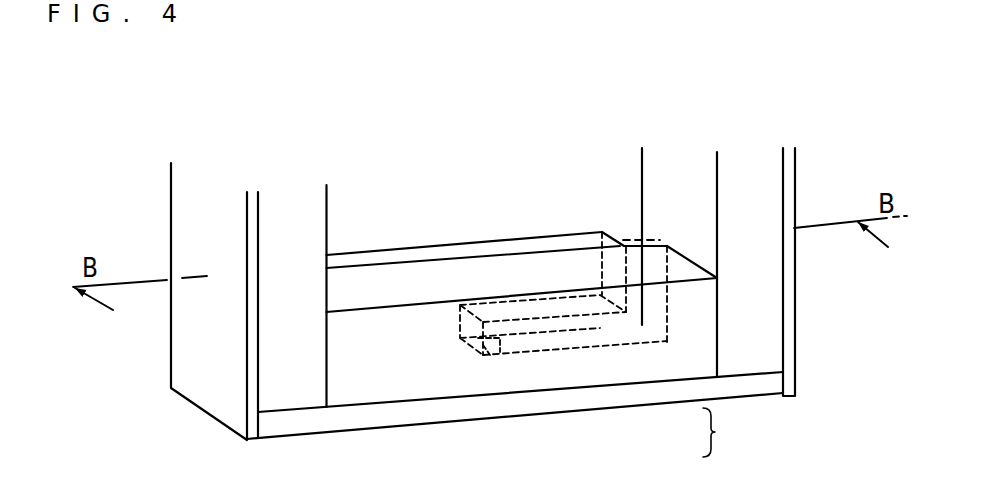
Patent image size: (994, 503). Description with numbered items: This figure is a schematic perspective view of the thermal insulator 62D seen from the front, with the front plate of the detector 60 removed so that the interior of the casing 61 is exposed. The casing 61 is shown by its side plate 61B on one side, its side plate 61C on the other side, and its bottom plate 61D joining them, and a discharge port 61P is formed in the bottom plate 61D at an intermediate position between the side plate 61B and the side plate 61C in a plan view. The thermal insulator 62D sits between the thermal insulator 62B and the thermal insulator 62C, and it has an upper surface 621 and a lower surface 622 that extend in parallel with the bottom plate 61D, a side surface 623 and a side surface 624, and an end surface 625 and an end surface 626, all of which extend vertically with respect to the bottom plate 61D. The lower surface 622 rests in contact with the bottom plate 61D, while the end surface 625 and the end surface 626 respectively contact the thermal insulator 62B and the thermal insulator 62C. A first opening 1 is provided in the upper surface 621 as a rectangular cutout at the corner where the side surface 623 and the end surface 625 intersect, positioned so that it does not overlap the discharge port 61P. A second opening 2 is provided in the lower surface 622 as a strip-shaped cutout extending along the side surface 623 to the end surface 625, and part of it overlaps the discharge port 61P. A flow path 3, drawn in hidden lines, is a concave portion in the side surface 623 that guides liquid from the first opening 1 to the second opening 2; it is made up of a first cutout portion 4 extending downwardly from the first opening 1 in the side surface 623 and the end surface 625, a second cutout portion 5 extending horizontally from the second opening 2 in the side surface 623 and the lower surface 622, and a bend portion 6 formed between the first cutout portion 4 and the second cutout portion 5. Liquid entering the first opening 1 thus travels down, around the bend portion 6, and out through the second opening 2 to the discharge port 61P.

The detector 60 is at (874, 128).
The casing 61 is at (172, 203).
The side plate 61B is at (792, 147).
The side plate 61C is at (212, 222).
The bottom plate 61D is at (342, 435).
The discharge port 61P is at (495, 362).
The thermal insulator 62B is at (752, 155).
The thermal insulator 62C is at (295, 203).
The thermal insulator 62D is at (418, 270).
The upper surface 621 is at (342, 275).
The lower surface 622 is at (568, 390).
The side surface 623 is at (490, 247).
The side surface 624 is at (402, 363).
The end surface 625 is at (697, 275).
The end surface 626 is at (323, 363).
The first opening 1 is at (625, 232).
The second opening 2 is at (547, 350).
The flow path 3 is at (724, 432).
The first cutout portion 4 is at (643, 333).
The second cutout portion 5 is at (600, 328).
The bend portion 6 is at (603, 333).